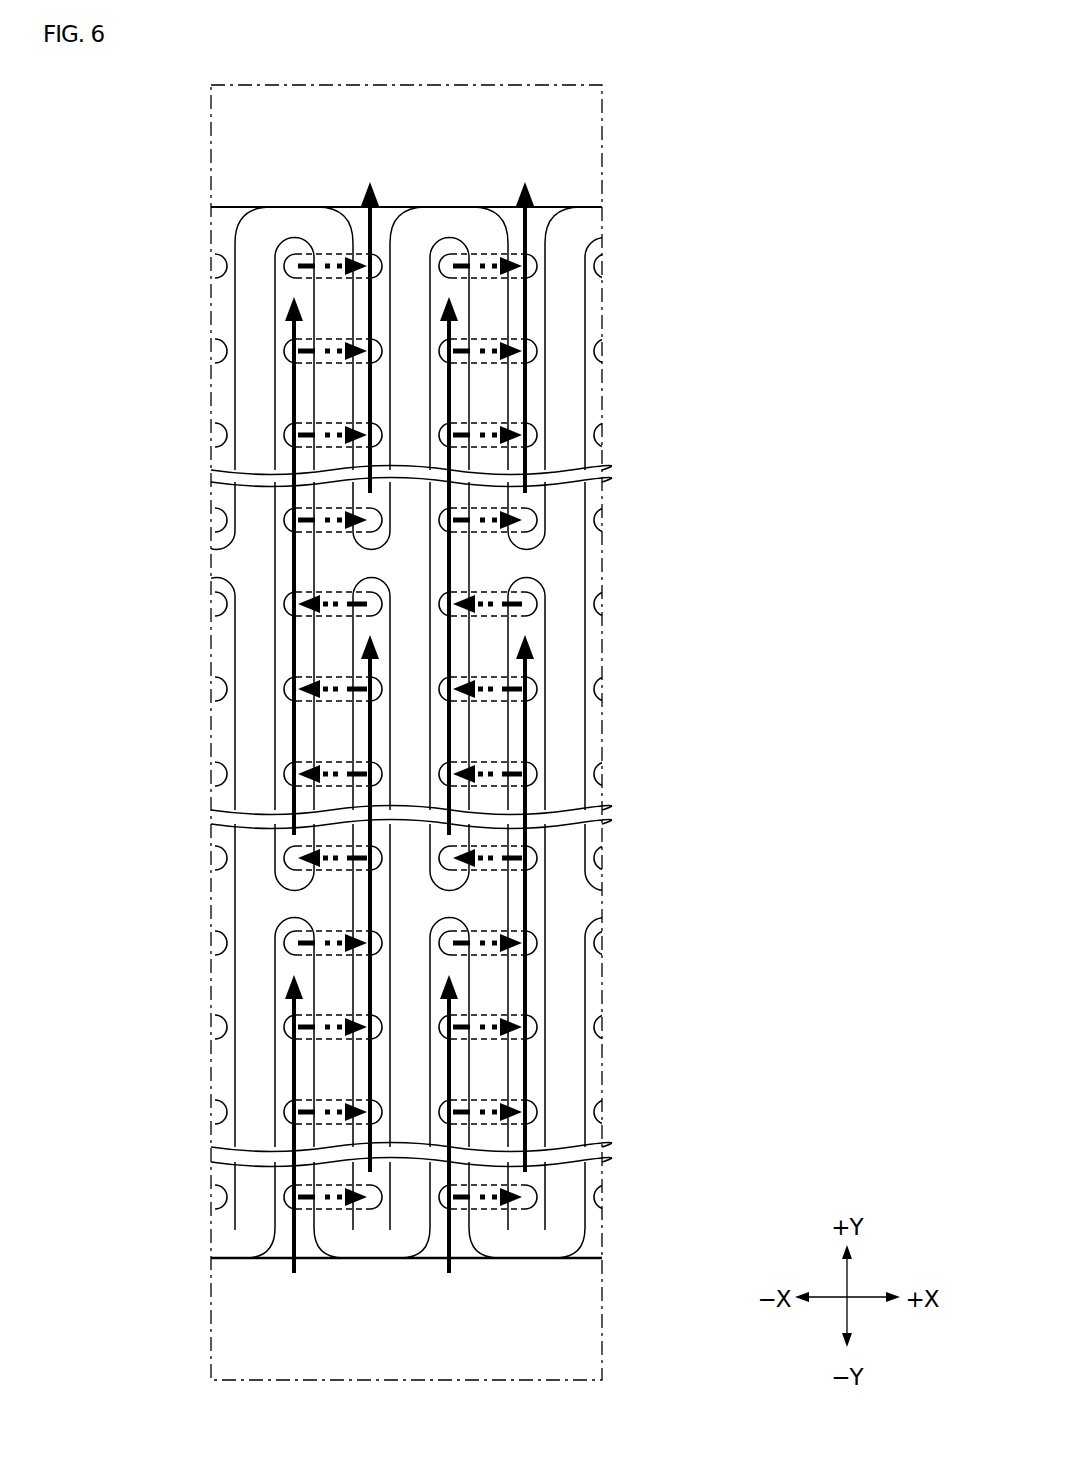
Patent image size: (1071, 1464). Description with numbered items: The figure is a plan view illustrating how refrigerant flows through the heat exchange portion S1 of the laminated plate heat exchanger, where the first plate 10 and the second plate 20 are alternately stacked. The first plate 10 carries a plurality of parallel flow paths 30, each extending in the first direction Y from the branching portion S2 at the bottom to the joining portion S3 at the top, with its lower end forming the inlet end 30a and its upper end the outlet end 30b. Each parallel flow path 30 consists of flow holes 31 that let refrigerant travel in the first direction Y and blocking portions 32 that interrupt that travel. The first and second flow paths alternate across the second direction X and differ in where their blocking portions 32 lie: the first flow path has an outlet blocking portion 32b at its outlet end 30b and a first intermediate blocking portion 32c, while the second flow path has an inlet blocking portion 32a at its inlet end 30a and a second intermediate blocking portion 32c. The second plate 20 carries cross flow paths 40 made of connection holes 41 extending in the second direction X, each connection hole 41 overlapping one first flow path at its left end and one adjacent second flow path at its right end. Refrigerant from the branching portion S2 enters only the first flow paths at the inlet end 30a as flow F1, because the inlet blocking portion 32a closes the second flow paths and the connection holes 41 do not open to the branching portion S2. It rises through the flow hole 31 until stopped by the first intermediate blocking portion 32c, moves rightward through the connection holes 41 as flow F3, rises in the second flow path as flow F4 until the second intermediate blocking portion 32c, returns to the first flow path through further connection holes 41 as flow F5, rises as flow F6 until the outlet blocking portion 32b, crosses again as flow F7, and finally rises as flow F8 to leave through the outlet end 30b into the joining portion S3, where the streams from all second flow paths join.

The first plate 10 is at (612, 204).
The second plate 20 is at (553, 203).
The parallel flow path 30 is at (525, 158).
The inlet end 30a is at (294, 1291).
The outlet end 30b is at (348, 196).
The flow hole 31 is at (276, 326).
The blocking portion 32 is at (411, 745).
The inlet blocking portion 32a is at (349, 1238).
The outlet blocking portion 32b is at (276, 226).
The intermediate blocking portion 32c is at (356, 560).
The cross flow path 40 is at (437, 731).
The connection hole 41 is at (300, 447).
The heat exchange portion S1 is at (108, 797).
The branching portion S2 is at (556, 1332).
The joining portion S3 is at (556, 162).
The flow F1 is at (296, 1245).
The flow F3 is at (330, 1023).
The flow F4 is at (292, 840).
The flow F5 is at (330, 774).
The flow F6 is at (293, 552).
The flow F7 is at (330, 436).
The flow F8 is at (368, 290).